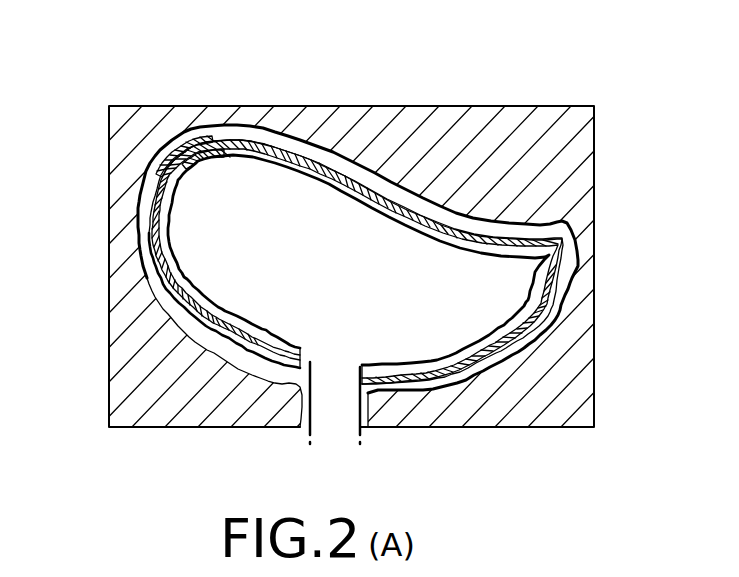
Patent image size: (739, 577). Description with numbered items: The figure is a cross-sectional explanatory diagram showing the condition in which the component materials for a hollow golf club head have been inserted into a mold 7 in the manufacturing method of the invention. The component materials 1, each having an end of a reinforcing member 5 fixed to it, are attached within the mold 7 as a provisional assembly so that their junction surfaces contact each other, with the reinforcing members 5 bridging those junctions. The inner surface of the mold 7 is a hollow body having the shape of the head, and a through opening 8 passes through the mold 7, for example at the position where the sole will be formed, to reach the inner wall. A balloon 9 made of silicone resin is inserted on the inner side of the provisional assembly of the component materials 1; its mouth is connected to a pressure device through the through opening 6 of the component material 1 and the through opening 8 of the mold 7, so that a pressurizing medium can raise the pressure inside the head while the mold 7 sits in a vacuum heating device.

The component material 1 is at (340, 165).
The reinforcing member 5 is at (197, 150).
The through opening 6 is at (310, 362).
The mold 7 is at (491, 115).
The through opening 8 is at (303, 428).
The balloon 9 is at (396, 226).